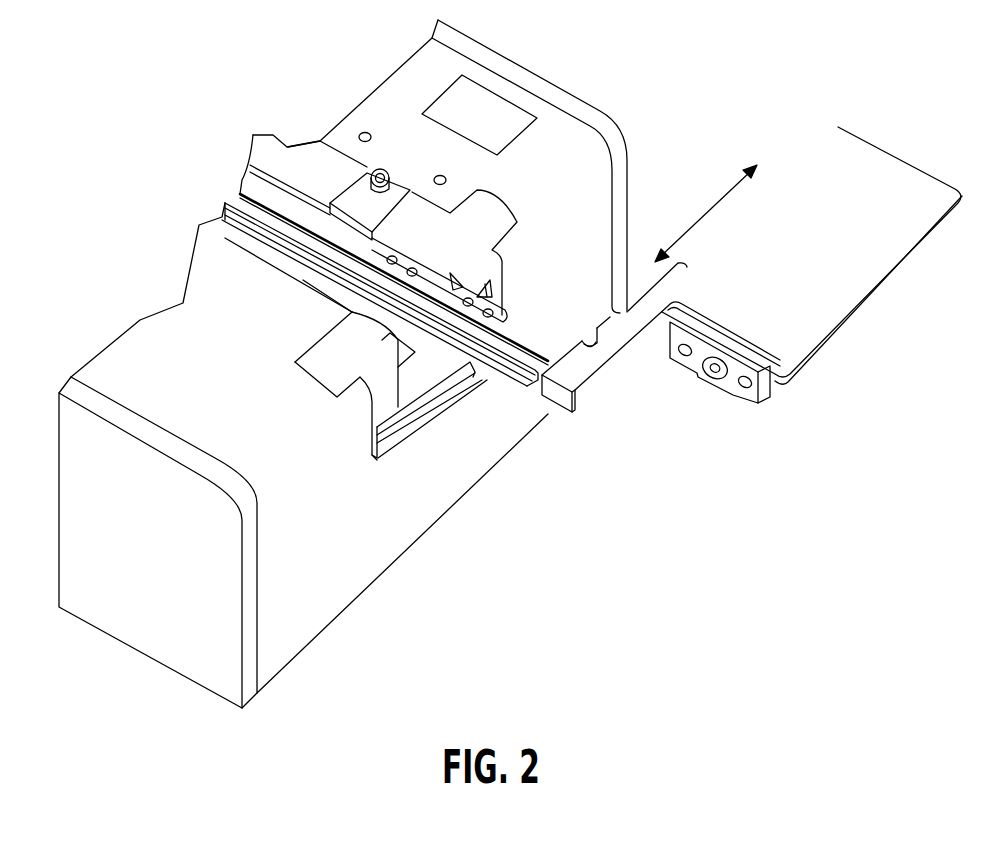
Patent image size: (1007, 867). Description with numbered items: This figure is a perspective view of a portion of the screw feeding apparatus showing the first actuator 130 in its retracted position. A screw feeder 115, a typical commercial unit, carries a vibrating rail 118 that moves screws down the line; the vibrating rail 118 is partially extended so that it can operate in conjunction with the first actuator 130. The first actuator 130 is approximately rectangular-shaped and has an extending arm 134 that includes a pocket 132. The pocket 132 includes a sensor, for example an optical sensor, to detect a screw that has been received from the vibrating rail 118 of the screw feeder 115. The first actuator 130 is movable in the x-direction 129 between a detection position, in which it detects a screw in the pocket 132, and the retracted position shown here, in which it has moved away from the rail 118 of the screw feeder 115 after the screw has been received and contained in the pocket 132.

The screw feeder 115 is at (555, 79).
The vibrating rail 118 is at (432, 340).
The x-direction 129 is at (720, 198).
The first actuator 130 is at (899, 154).
The pocket 132 is at (578, 342).
The extending arm 134 is at (577, 372).